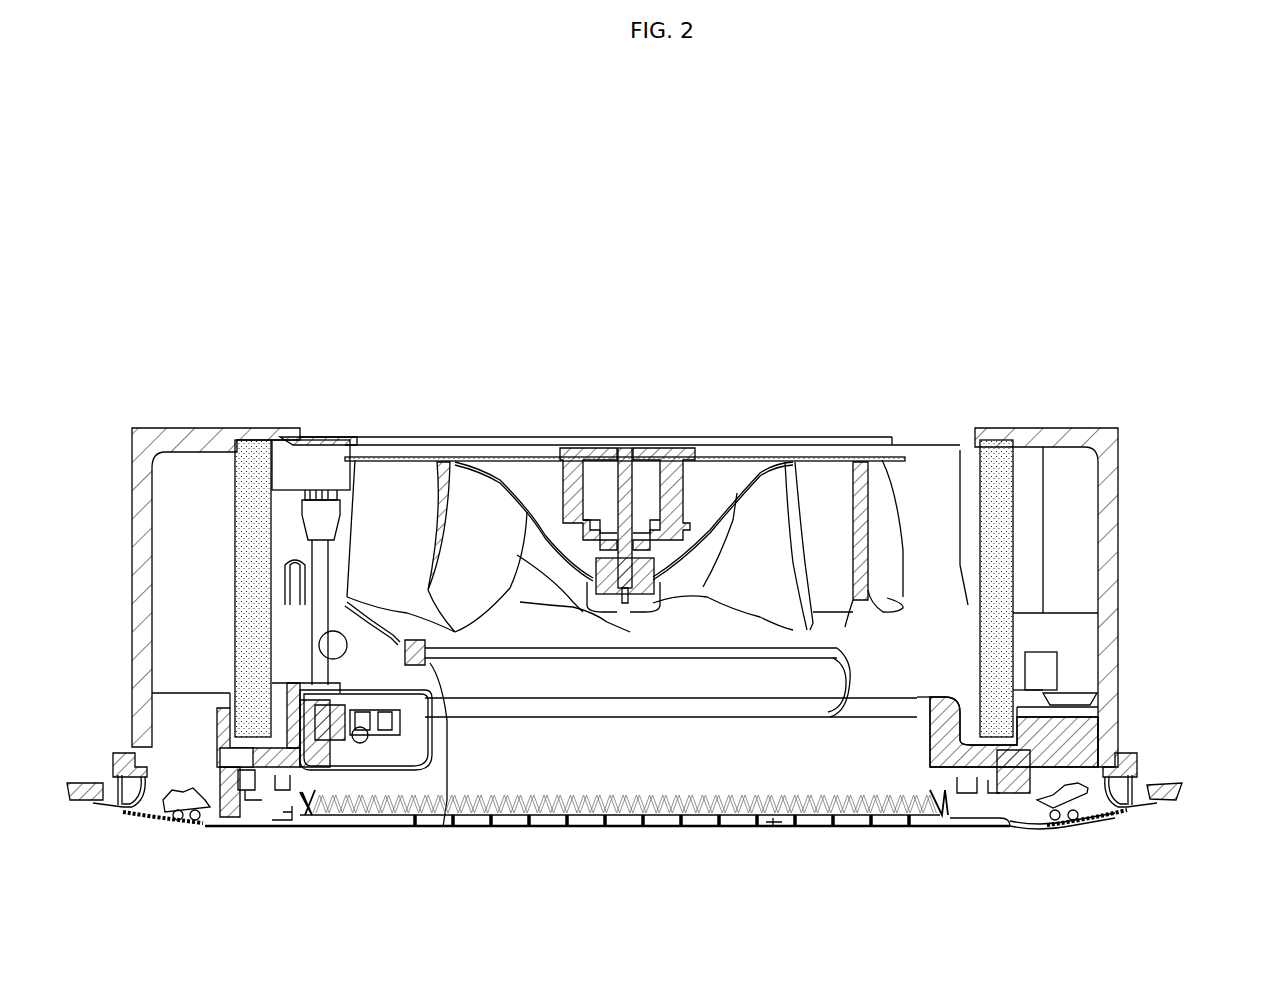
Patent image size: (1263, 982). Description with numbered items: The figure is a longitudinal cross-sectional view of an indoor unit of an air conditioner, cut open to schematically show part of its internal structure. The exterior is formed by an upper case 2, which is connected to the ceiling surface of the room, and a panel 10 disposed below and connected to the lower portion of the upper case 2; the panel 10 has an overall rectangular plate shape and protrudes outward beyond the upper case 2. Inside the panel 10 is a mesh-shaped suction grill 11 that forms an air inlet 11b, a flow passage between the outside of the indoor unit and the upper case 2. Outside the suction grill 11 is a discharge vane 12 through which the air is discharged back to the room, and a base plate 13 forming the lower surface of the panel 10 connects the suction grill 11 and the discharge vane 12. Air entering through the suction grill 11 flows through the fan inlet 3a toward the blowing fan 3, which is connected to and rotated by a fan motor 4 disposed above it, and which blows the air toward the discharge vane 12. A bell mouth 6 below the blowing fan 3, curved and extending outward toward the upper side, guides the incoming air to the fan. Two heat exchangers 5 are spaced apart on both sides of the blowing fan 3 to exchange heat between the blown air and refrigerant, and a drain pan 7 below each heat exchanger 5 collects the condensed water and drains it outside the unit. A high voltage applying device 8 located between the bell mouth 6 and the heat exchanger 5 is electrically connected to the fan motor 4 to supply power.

The upper case 2 is at (1108, 450).
The blowing fan 3 is at (822, 455).
The fan inlet 3a is at (645, 676).
The fan motor 4 is at (672, 470).
The heat exchanger 5 is at (997, 470).
The bell mouth 6 is at (445, 827).
The drain pan 7 is at (990, 753).
The high voltage applying device 8 is at (400, 770).
The panel 10 is at (1172, 782).
The suction grill 11 is at (815, 827).
The air inlet 11b is at (773, 826).
The discharge vane 12 is at (165, 826).
The base plate 13 is at (1003, 830).